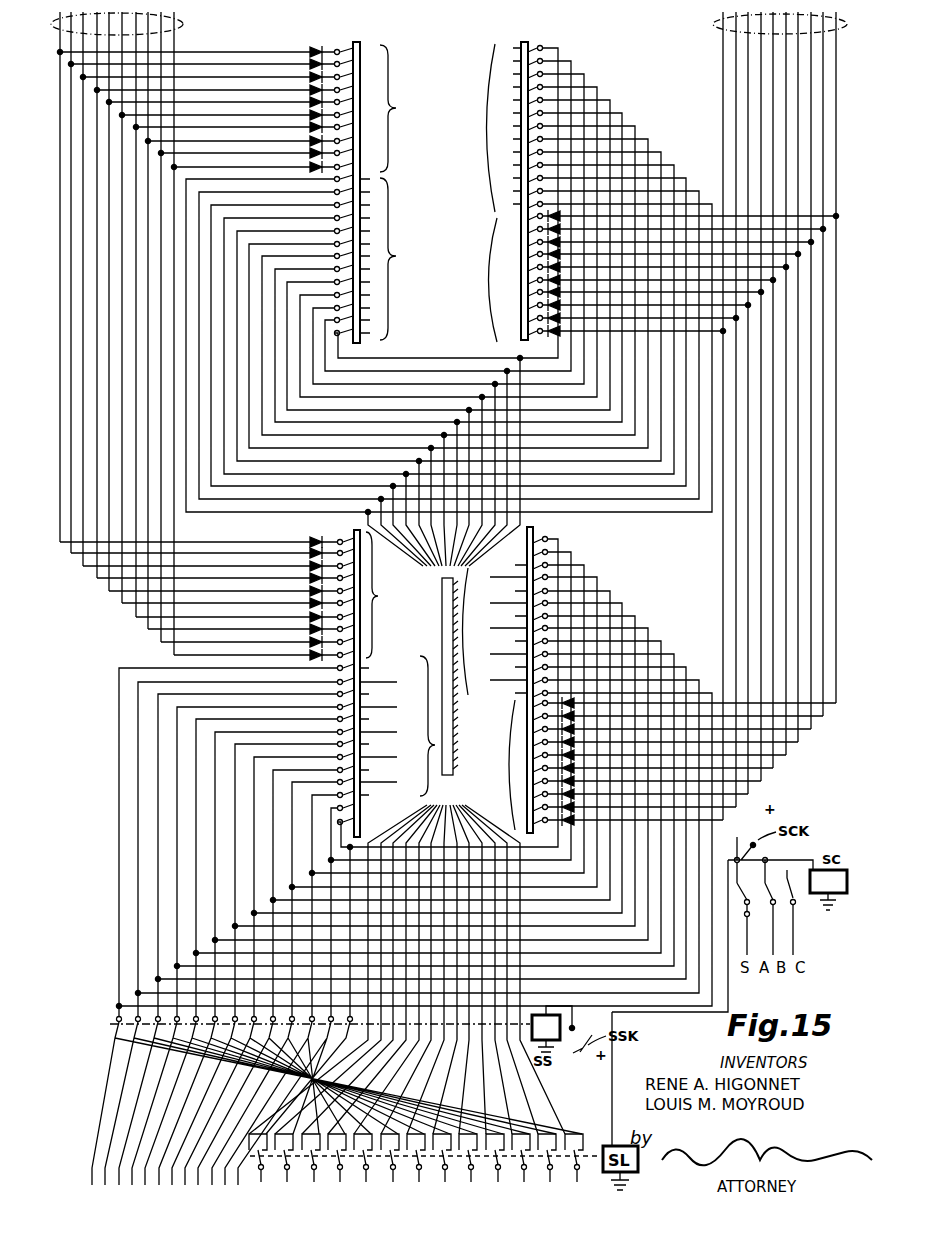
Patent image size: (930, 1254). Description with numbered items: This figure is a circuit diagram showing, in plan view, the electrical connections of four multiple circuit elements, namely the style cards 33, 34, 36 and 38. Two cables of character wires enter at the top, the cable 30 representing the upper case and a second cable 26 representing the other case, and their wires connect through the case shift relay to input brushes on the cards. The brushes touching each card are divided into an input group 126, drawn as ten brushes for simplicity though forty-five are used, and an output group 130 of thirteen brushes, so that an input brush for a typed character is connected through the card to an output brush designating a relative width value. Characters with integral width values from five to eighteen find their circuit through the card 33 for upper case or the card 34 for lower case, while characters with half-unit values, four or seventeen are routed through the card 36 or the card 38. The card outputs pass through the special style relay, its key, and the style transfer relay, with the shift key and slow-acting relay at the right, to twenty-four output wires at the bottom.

The cable 30 is at (183, 24).
The group of conductors 26 is at (713, 24).
The card 33 is at (358, 42).
The card 34 is at (538, 42).
The card 36 is at (354, 532).
The card 38 is at (533, 530).
The input group of brushes 126 is at (396, 108).
The output group of brushes 130 is at (397, 256).